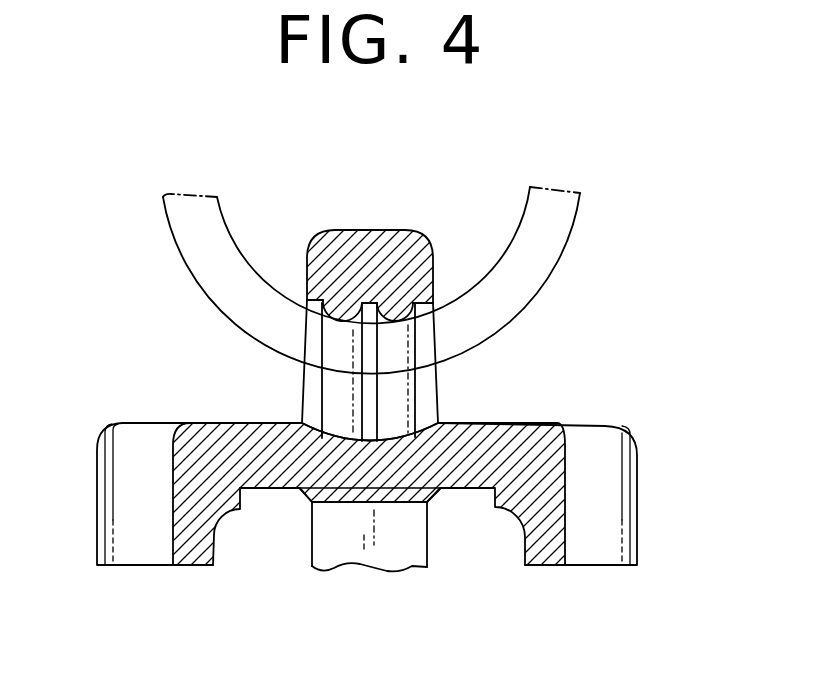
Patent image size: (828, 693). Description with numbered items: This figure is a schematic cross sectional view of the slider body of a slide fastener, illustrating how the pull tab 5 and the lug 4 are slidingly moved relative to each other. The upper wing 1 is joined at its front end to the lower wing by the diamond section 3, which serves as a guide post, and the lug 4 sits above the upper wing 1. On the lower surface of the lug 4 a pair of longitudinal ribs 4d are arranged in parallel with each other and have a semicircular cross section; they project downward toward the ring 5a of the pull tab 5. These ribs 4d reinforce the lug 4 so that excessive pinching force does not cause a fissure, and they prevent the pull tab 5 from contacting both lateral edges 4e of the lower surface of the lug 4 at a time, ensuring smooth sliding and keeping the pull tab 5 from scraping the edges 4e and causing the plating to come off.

The upper wing 1 is at (524, 450).
The diamond section (guide post) 3 is at (380, 545).
The lug 4 is at (319, 225).
The longitudinal ribs 4d is at (394, 312).
The lateral edges of the lower surface of the lug 4e is at (307, 300).
The pull tab 5 is at (598, 182).
The ring 5a is at (548, 237).